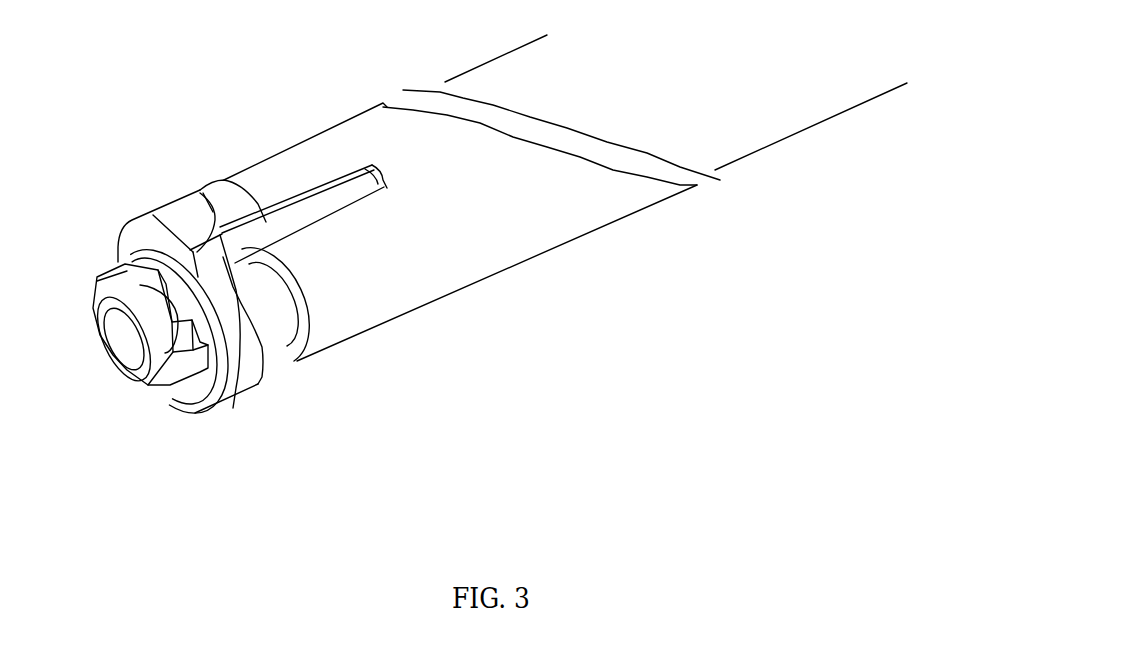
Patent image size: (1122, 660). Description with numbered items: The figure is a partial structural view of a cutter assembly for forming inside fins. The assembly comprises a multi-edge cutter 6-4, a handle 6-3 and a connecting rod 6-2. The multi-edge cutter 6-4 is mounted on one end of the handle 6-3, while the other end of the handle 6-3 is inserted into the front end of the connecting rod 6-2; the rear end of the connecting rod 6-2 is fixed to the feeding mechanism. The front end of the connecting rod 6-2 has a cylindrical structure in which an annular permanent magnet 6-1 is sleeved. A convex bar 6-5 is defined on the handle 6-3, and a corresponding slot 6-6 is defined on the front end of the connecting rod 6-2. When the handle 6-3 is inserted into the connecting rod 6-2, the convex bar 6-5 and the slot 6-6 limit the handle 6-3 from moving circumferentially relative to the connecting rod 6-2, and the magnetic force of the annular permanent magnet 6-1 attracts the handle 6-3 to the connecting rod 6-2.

The annular permanent magnet 6-1 is at (226, 206).
The connecting rod 6-2 is at (512, 208).
The handle 6-3 is at (275, 298).
The multi-edge cutter 6-4 is at (237, 345).
The convex bar 6-5 is at (323, 203).
The slot 6-6 is at (377, 187).